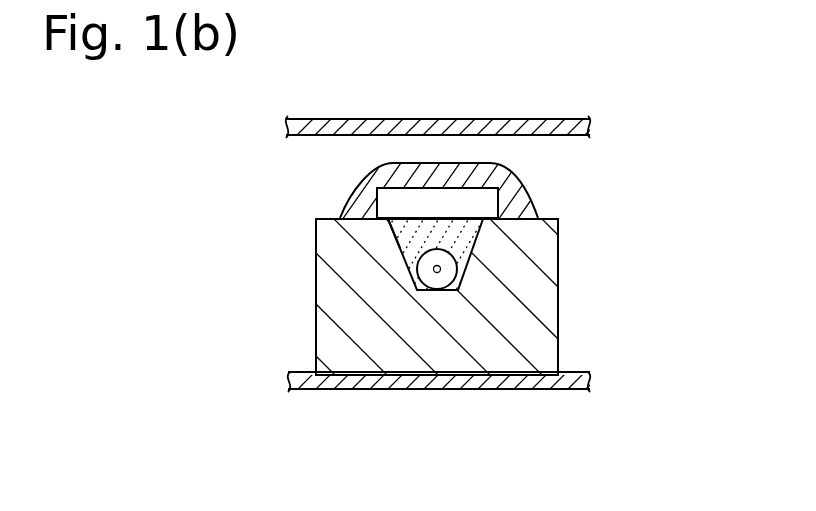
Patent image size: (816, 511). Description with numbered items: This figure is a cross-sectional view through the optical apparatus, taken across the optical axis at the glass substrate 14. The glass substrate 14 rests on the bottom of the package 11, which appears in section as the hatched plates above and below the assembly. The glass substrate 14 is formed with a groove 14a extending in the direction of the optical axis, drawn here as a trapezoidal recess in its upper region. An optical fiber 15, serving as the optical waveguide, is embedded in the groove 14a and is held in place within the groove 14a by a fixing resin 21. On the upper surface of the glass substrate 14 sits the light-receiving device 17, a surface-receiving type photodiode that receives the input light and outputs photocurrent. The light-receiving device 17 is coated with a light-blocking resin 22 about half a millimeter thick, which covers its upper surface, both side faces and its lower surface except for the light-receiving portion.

The package 11 is at (485, 119).
The glass substrate 14 is at (559, 312).
The groove 14a is at (463, 239).
The optical fiber 15 is at (457, 268).
The light-receiving device 17 is at (411, 188).
The fixing resin 21 is at (400, 243).
The light-blocking resin 22 is at (529, 196).